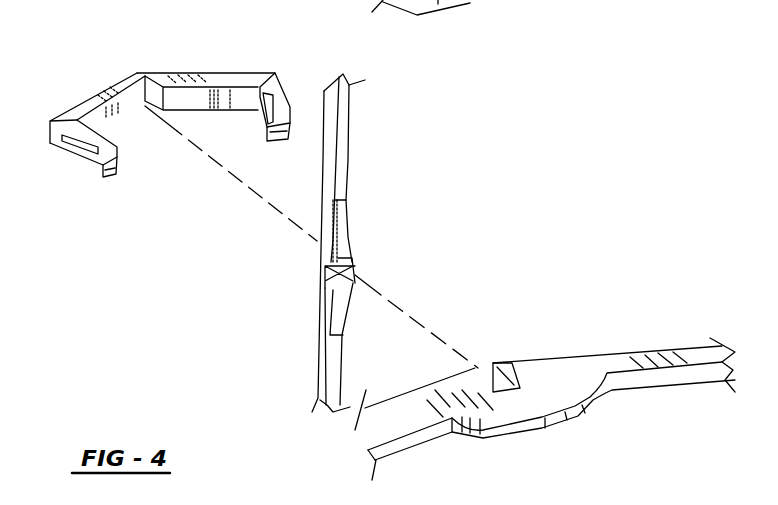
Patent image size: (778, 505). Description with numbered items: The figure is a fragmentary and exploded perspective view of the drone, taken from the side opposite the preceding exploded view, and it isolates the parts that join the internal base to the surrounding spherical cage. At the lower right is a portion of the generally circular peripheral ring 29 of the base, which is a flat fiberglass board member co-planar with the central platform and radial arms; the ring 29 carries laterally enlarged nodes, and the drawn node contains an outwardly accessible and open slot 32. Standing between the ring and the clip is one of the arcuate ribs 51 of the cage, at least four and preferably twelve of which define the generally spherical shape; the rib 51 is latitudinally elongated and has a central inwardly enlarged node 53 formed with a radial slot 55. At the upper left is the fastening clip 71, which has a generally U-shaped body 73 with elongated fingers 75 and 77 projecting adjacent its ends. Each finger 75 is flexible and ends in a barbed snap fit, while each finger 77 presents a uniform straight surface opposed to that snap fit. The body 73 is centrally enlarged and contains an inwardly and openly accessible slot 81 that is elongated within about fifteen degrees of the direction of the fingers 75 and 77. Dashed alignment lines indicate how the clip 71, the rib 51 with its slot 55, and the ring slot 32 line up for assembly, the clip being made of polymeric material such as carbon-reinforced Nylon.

The peripheral ring 29 is at (687, 355).
The slot 32 is at (516, 363).
The arcuate rib 51 is at (345, 155).
The node 53 is at (345, 233).
The radial slot 55 is at (325, 288).
The fastening clip 71 is at (277, 88).
The U-shaped body 73 is at (168, 73).
The finger 75 is at (293, 97).
The finger 77 is at (278, 141).
The slot 81 is at (140, 82).